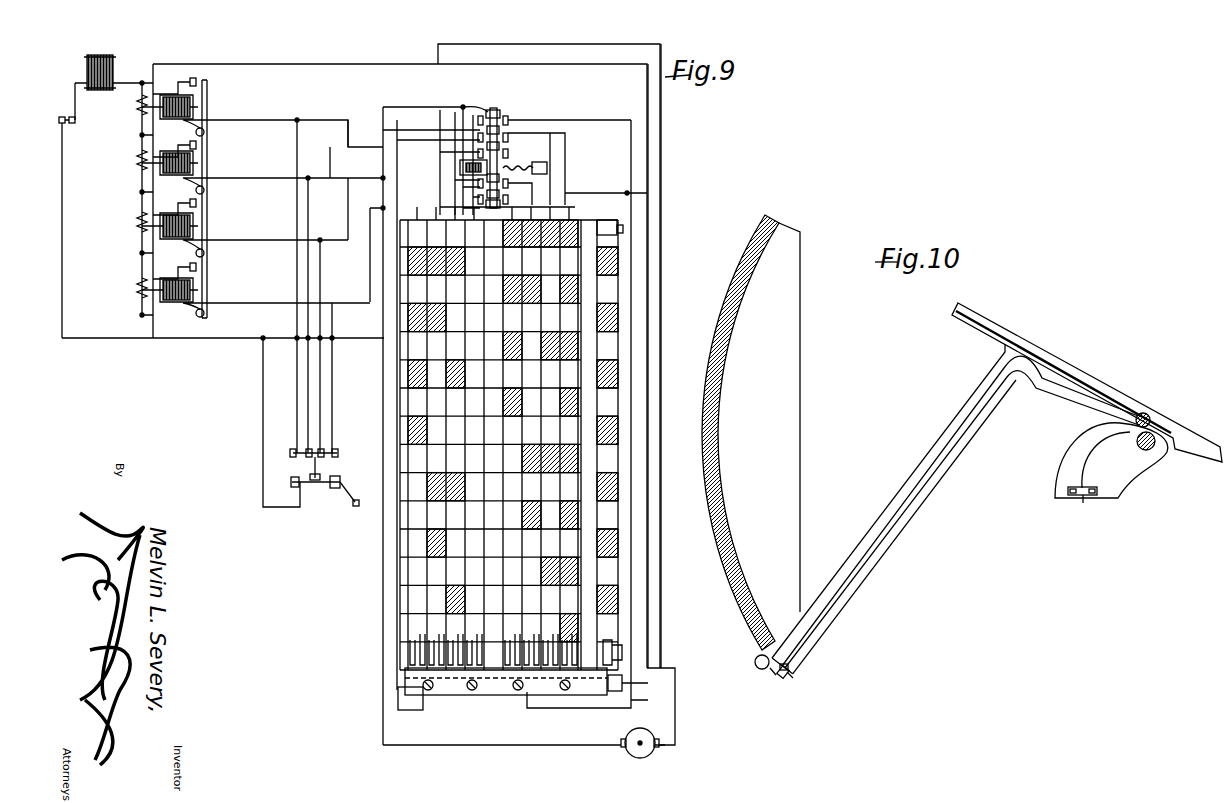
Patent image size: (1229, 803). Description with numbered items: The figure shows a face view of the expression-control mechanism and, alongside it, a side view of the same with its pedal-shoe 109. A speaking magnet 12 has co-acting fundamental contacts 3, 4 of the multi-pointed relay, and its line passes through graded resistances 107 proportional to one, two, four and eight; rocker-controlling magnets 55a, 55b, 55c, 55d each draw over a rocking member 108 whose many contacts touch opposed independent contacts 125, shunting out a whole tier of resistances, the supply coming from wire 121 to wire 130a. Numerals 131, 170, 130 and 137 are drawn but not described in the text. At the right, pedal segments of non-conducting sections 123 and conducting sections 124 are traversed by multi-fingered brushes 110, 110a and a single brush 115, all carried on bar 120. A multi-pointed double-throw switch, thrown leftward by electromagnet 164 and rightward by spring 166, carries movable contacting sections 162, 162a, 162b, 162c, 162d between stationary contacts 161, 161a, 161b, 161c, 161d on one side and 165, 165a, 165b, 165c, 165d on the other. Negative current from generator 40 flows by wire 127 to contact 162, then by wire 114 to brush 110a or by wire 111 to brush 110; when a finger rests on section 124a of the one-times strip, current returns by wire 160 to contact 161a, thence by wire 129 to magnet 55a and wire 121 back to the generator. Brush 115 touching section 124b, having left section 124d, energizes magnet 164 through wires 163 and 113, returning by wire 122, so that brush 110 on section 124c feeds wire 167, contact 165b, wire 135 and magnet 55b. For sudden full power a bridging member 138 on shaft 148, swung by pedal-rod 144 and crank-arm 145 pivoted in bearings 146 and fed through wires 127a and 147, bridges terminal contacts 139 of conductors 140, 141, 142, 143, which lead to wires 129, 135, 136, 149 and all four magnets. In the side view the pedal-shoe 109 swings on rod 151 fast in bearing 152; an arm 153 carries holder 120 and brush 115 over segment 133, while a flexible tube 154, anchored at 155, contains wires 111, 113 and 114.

In FIG. 9, the speaking magnet 12 is at (84, 70).
In FIG. 9, the fundamental contact 3 is at (60, 116).
In FIG. 9, the fundamental contact 4 is at (75, 121).
In FIG. 9, the resistances 107 is at (138, 295).
In FIG. 9, the bus wire 131 is at (140, 137).
In FIG. 9, the wire 121 is at (665, 745).
In FIG. 9, the wire 113 is at (672, 700).
In FIG. 10, the wire 113 is at (790, 668).
In FIG. 9, the wire 127 is at (398, 560).
In FIG. 9, the wire 127a is at (263, 430).
In FIG. 9, the rocker-controlling magnet 55a is at (200, 92).
In FIG. 9, the rocker-controlling magnet 55b is at (200, 155).
In FIG. 9, the rocker-controlling magnet 55c is at (200, 222).
In FIG. 9, the rocker-controlling magnet 55d is at (200, 282).
In FIG. 9, the rocking member 108 is at (226, 292).
In FIG. 9, the contact 170 is at (222, 270).
In FIG. 9, the contacts 125 is at (215, 255).
In FIG. 9, the pivot 130 is at (216, 253).
In FIG. 9, the wire 130a is at (200, 317).
In FIG. 9, the wire 129 is at (333, 120).
In FIG. 9, the wire 135 is at (330, 147).
In FIG. 9, the electromagnet 164 is at (375, 150).
In FIG. 9, the wire 136 is at (290, 215).
In FIG. 9, the conductor 141 is at (310, 212).
In FIG. 9, the conductor 140 is at (297, 408).
In FIG. 9, the conductor 137 is at (370, 268).
In FIG. 9, the conductor 142 is at (321, 292).
In FIG. 9, the wire 149 is at (280, 325).
In FIG. 9, the conductor 143 is at (333, 402).
In FIG. 9, the bridging member 138 is at (336, 447).
In FIG. 9, the terminal contacts 139 is at (348, 460).
In FIG. 9, the shaft 148 is at (292, 483).
In FIG. 9, the bearings 146 is at (335, 488).
In FIG. 9, the wire 147 is at (300, 510).
In FIG. 9, the pedal-rod 144 is at (356, 508).
In FIG. 9, the crank-arm 145 is at (352, 506).
In FIG. 9, the wire 111 is at (408, 710).
In FIG. 10, the wire 111 is at (758, 655).
In FIG. 9, the stationary contact 165 is at (490, 110).
In FIG. 9, the wire 163 is at (463, 100).
In FIG. 9, the stationary contact 165a is at (482, 108).
In FIG. 9, the contacting section 162 is at (486, 112).
In FIG. 9, the contacting section 162a is at (505, 115).
In FIG. 9, the stationary contact 161 is at (508, 110).
In FIG. 9, the stationary contact 161a is at (509, 137).
In FIG. 9, the stationary contact 161b is at (508, 146).
In FIG. 9, the contacting section 162b is at (536, 146).
In FIG. 9, the wire 160 is at (548, 140).
In FIG. 9, the spring 166 is at (533, 160).
In FIG. 9, the contacting section 162c is at (550, 170).
In FIG. 9, the stationary contact 161c is at (509, 180).
In FIG. 9, the wire 122 is at (610, 192).
In FIG. 9, the stationary contact 161d is at (509, 190).
In FIG. 9, the contacting section 162d is at (509, 200).
In FIG. 9, the stationary contact 165b is at (478, 152).
In FIG. 9, the wire 167 is at (478, 183).
In FIG. 9, the stationary contact 165c is at (478, 198).
In FIG. 9, the stationary contact 165d is at (486, 206).
In FIG. 9, the non-conducting sections 123 is at (610, 625).
In FIG. 9, the conducting sections 124 is at (607, 535).
In FIG. 9, the conducting section 124a is at (610, 605).
In FIG. 9, the conducting section 124b is at (607, 583).
In FIG. 9, the conducting section 124c is at (420, 628).
In FIG. 9, the conducting section 124d is at (625, 655).
In FIG. 9, the multi-fingered brush 110 is at (412, 660).
In FIG. 9, the multi-fingered brush 110a is at (545, 692).
In FIG. 9, the wire 114 is at (555, 710).
In FIG. 10, the wire 114 is at (765, 670).
In FIG. 9, the brush 115 is at (625, 645).
In FIG. 10, the brush 115 is at (758, 670).
In FIG. 9, the brush-carrying bar 120 is at (690, 685).
In FIG. 10, the brush-carrying bar 120 is at (770, 672).
In FIG. 9, the generator 40 is at (638, 758).
In FIG. 9, the segment 133 is at (785, 350).
In FIG. 10, the arm 153 is at (880, 510).
In FIG. 10, the tube 154 is at (895, 570).
In FIG. 10, the pedal-shoe 109 is at (1044, 345).
In FIG. 10, the anchor 155 is at (1145, 412).
In FIG. 10, the rod 151 is at (1156, 450).
In FIG. 10, the bearing 152 is at (1108, 478).